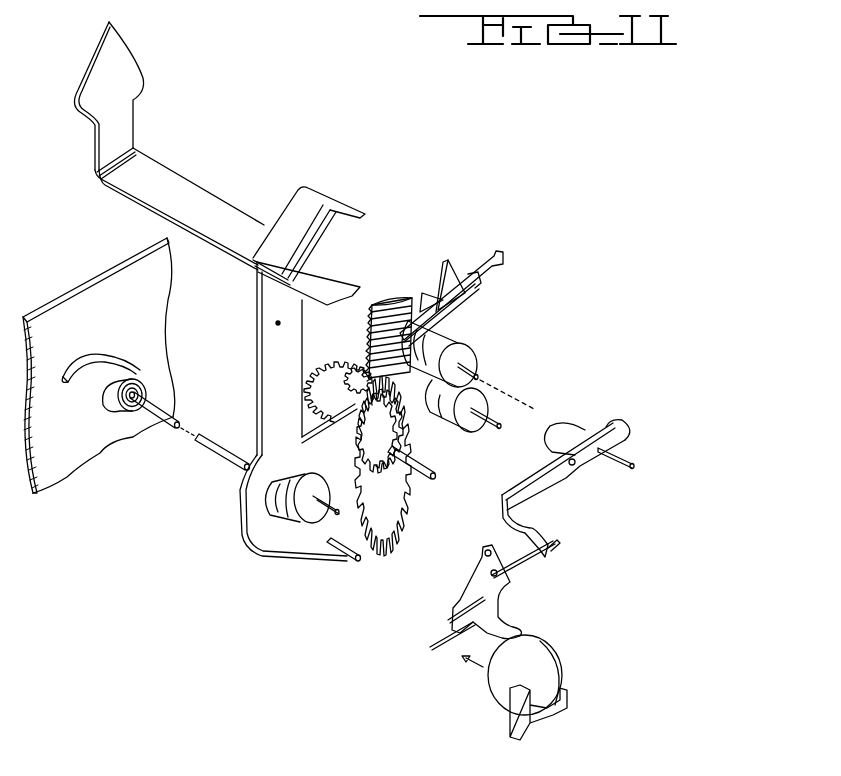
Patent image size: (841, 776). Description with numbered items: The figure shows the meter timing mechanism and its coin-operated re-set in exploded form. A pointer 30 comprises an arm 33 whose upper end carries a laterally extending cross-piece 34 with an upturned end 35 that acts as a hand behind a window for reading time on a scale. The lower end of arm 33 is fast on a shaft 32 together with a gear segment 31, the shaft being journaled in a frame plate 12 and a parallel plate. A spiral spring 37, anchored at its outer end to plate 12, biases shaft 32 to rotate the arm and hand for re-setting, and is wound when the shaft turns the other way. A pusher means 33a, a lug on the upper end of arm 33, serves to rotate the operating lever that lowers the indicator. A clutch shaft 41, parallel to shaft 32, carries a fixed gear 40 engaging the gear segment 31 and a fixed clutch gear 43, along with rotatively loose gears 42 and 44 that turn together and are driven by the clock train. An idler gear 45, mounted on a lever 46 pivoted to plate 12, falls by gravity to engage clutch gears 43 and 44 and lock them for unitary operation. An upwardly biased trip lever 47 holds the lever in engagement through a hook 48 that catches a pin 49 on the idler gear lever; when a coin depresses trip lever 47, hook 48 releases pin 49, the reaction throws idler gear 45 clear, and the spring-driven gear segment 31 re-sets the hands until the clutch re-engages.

The plate 12 is at (79, 285).
The pointer 30 is at (238, 294).
The gear segment 31 is at (365, 530).
The shaft 32 is at (217, 460).
The arm 33 is at (265, 326).
The pusher means 33a is at (320, 200).
The cross-piece 34 is at (193, 198).
The upturned end 35 is at (131, 40).
The spiral spring 37 is at (145, 385).
The gear 40 is at (393, 472).
The clutch shaft 41 is at (436, 470).
The rotatively loose gear 42 is at (300, 388).
The clutch gear 43 is at (338, 360).
The clutch gear 44 is at (352, 358).
The idler gear 45 is at (388, 292).
The lever 46 is at (446, 400).
The trip lever 47 is at (505, 264).
The hook 48 is at (476, 270).
The pin 49 is at (452, 272).